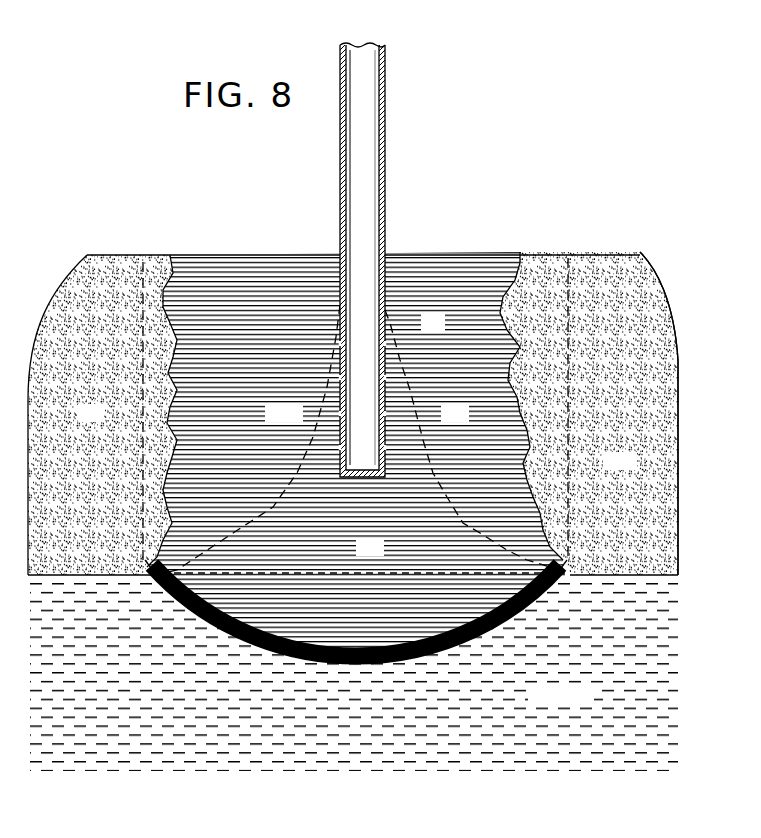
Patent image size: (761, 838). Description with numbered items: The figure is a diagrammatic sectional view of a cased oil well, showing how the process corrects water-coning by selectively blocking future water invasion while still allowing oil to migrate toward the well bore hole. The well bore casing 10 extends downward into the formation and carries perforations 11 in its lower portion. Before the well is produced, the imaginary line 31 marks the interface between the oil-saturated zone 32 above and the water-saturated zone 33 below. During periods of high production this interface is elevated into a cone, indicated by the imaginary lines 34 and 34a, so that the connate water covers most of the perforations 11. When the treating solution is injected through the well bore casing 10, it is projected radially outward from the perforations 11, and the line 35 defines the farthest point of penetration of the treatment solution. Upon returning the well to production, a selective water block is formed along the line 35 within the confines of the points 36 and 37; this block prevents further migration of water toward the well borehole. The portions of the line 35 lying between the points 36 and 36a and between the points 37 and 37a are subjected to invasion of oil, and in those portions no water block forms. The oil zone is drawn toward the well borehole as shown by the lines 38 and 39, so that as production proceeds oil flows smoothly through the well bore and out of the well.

The well bore casing 10 is at (385, 168).
The perforations 11 is at (384, 380).
The imaginary line 31 is at (361, 574).
The oil-saturated zone 32 is at (650, 440).
The water-saturated zone 33 is at (392, 742).
The imaginary line 34 is at (423, 440).
The imaginary line 34a is at (293, 463).
The line 35 is at (136, 398).
The point 36 is at (141, 569).
The point 37 is at (571, 575).
The point 36a is at (143, 262).
The point 37a is at (567, 297).
The line 38 is at (173, 273).
The line 39 is at (517, 280).